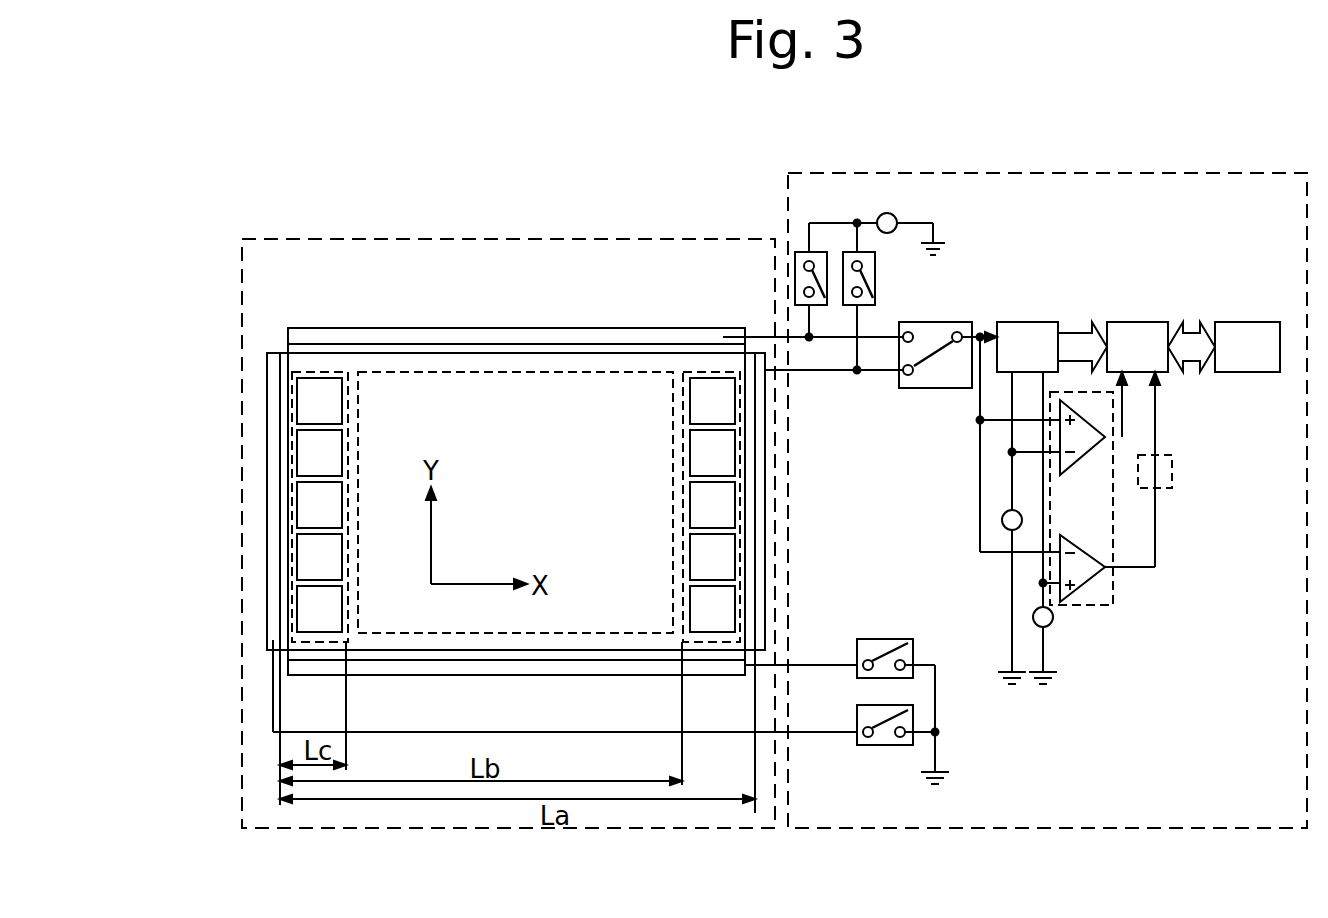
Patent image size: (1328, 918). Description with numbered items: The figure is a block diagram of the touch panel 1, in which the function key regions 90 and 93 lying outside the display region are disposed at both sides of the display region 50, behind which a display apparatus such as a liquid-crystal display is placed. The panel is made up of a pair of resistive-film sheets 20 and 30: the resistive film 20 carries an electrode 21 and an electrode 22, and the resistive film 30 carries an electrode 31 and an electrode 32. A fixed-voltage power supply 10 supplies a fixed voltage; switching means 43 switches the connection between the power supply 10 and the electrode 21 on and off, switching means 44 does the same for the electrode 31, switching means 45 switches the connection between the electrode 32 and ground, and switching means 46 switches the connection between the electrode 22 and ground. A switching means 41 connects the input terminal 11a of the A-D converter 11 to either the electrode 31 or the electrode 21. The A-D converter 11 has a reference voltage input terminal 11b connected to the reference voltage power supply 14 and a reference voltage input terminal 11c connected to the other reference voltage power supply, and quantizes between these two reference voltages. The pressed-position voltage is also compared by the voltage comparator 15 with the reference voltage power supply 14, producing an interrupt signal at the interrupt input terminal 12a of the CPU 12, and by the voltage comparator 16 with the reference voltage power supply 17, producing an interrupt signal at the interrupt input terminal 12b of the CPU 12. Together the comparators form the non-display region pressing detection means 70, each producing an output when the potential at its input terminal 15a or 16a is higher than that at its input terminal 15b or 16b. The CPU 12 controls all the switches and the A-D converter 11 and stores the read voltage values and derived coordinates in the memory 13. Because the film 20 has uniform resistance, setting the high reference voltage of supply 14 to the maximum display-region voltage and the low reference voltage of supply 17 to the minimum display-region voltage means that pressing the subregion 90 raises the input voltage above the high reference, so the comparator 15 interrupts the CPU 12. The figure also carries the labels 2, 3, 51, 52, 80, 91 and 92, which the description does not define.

The touch panel 1 is at (650, 157).
The touch panel 2 is at (520, 239).
The control circuit 3 is at (788, 200).
The fixed-voltage power supply 10 is at (895, 216).
The A-D converter 11 is at (1012, 322).
The input terminal 11a is at (985, 333).
The reference voltage input terminal 11b is at (1008, 385).
The reference voltage input terminal 11c is at (1048, 372).
The CPU 12 is at (1122, 322).
The interrupt input terminal 12a is at (1130, 375).
The interrupt input terminal 12b is at (1160, 375).
The memory 13 is at (1230, 322).
The reference voltage power supply 14 is at (1002, 521).
The voltage comparator 15 is at (1105, 462).
The input terminal 15a is at (1060, 432).
The input terminal 15b is at (1062, 458).
The voltage comparator 16 is at (1113, 600).
The input terminal 16a is at (1043, 583).
The input terminal 16b is at (1060, 552).
The reference voltage power supply 17 is at (1052, 622).
The resistive film 20 is at (267, 422).
The electrode 21 is at (765, 412).
The electrode 22 is at (267, 384).
The resistive film 30 is at (365, 328).
The electrode 31 is at (455, 341).
The electrode 32 is at (548, 674).
The switching means 41 is at (928, 322).
The switching means 43 is at (875, 280).
The switching means 44 is at (818, 252).
The switching means 45 is at (885, 639).
The switching means 46 is at (872, 745).
The display region 50 is at (568, 372).
The right key electrodes 51 is at (735, 418).
The left key electrodes 52 is at (297, 418).
The non-display region pressing detection means 70 is at (1113, 585).
The detection block 80 is at (1172, 470).
The function key region 90 is at (710, 378).
The lead lines 91 is at (325, 645).
The left key electrode 92 is at (350, 402).
The function key region 93 is at (315, 373).